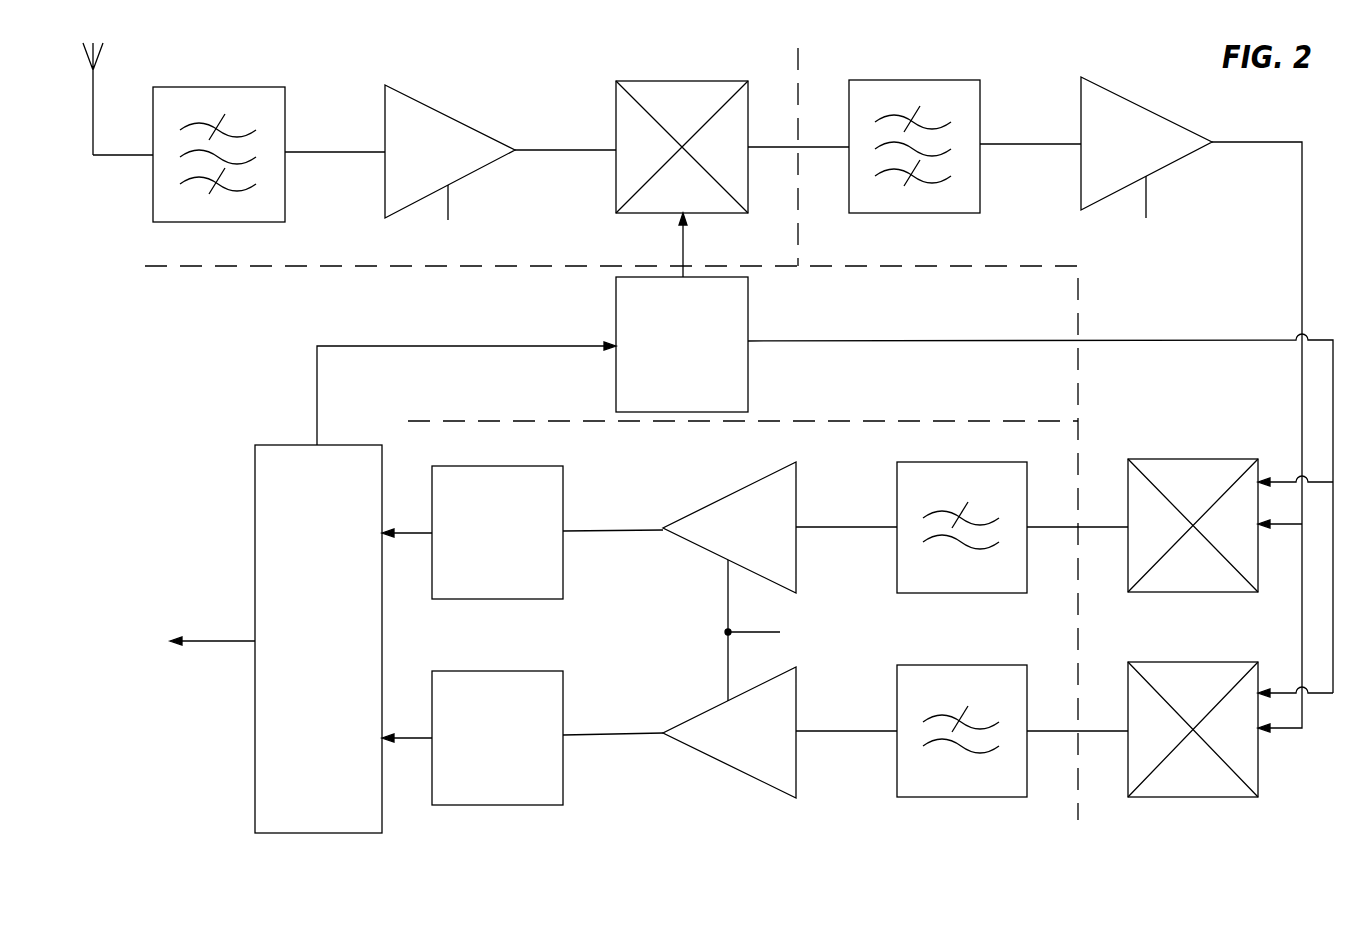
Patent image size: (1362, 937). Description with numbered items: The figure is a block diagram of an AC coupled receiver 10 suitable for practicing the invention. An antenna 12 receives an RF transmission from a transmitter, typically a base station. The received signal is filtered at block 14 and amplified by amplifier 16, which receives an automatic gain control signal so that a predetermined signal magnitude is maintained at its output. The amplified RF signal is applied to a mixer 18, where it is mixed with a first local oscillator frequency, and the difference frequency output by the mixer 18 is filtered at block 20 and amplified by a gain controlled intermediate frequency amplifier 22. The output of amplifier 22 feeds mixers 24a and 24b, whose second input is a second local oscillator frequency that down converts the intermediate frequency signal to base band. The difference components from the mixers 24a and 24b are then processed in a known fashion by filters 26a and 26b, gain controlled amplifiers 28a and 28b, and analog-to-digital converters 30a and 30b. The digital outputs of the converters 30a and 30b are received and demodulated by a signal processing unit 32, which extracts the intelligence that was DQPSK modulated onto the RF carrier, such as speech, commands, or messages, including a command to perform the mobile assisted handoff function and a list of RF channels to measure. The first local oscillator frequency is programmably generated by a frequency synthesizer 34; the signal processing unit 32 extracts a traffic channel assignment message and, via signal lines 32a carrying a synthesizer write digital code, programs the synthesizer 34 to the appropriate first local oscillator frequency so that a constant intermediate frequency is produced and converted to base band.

The AC coupled receiver 10 is at (178, 497).
The antenna 12 is at (93, 112).
The filter block 14 is at (220, 87).
The amplifier 16 is at (448, 117).
The mixer 18 is at (683, 81).
The filter block 20 is at (913, 80).
The intermediate frequency amplifier 22 is at (1150, 108).
The mixer 24a is at (1193, 459).
The mixer 24b is at (1193, 662).
The filter 26a is at (950, 462).
The filter 26b is at (965, 665).
The AGC controlled amplifier 28a is at (730, 495).
The AGC controlled amplifier 28b is at (728, 768).
The analog-to-digital converter 30a is at (483, 466).
The analog-to-digital converter 30b is at (497, 671).
The signal processing unit 32 is at (277, 445).
The signal lines 32a is at (390, 348).
The frequency synthesizer 34 is at (616, 308).